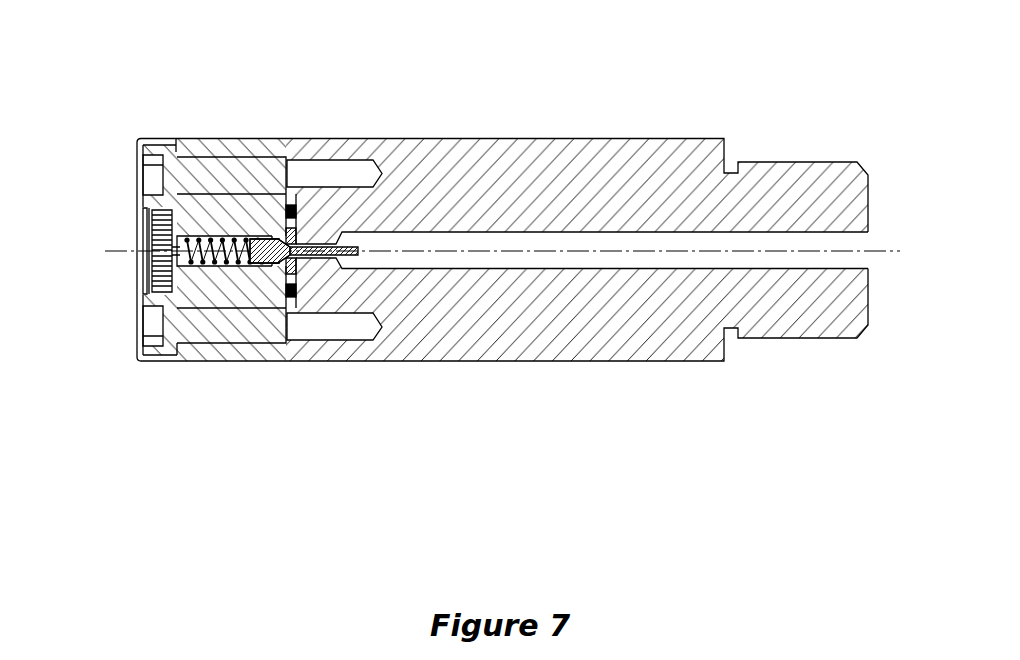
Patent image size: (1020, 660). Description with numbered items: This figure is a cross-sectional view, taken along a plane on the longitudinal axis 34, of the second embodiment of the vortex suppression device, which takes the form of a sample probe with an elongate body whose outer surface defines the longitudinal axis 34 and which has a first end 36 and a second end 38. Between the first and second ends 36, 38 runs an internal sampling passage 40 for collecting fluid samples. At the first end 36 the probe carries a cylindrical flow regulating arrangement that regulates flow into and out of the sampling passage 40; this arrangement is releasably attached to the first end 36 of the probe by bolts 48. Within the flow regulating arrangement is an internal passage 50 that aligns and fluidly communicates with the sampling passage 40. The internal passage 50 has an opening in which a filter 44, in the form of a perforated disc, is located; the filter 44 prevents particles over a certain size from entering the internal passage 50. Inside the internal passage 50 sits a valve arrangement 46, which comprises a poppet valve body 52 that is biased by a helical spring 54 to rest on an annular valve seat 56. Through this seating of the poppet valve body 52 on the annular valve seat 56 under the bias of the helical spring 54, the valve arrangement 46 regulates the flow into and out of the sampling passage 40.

The longitudinal axis 34 is at (811, 250).
The first end 36 is at (136, 280).
The second end 38 is at (870, 282).
The internal sampling passage 40 is at (688, 246).
The filter 44 is at (163, 226).
The valve arrangement 46 is at (252, 276).
The bolts 48 is at (187, 328).
The internal passage 50 is at (189, 237).
The poppet valve body 52 is at (226, 237).
The helical spring 54 is at (213, 266).
The annular valve seat 56 is at (296, 230).